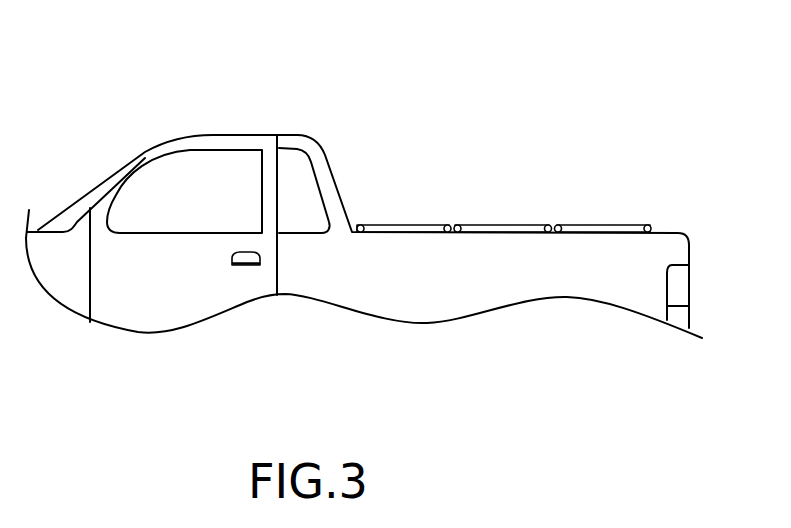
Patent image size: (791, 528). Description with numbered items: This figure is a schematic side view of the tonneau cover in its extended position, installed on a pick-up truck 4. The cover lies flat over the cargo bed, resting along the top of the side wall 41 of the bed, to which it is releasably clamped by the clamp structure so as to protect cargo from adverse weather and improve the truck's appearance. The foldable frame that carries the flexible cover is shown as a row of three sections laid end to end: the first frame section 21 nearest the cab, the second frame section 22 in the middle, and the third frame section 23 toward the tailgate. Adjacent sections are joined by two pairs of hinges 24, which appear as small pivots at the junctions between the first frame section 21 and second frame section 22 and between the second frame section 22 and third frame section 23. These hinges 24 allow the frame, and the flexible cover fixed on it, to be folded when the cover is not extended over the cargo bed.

The pick-up truck 4 is at (150, 123).
The first frame section 21 is at (402, 225).
The second frame section 22 is at (513, 227).
The third frame section 23 is at (610, 228).
The hinges 24 is at (454, 225).
The side wall 41 is at (497, 298).